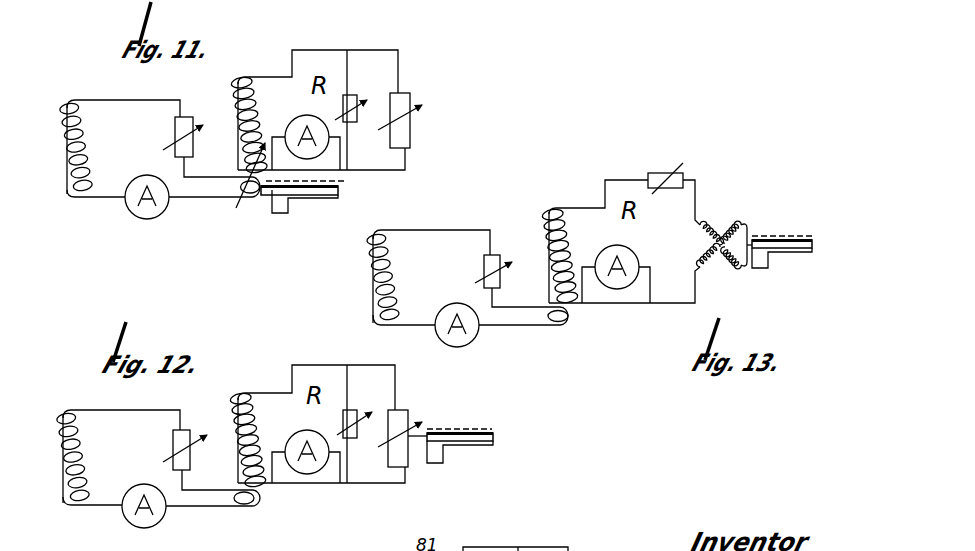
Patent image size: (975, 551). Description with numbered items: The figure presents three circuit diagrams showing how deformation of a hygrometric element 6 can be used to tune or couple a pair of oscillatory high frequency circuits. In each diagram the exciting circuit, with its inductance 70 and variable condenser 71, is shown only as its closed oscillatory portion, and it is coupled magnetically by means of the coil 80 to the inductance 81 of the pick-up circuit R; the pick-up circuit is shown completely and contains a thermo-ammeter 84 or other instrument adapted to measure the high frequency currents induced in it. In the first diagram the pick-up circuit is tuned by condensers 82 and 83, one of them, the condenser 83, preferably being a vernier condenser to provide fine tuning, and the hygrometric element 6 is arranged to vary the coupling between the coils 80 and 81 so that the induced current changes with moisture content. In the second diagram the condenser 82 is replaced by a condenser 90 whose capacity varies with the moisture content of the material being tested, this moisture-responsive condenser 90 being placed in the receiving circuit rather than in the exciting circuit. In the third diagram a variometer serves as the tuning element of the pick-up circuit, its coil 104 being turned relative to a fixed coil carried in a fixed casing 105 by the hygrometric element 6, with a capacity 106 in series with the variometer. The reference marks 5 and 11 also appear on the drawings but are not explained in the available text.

In FIG. 11, the heated element 5 is at (345, 181).
In FIG. 13, the heated element 5 is at (806, 237).
In FIG. 12, the heated element 5 is at (495, 429).
In FIG. 11, the hygrometric element 6 is at (318, 197).
In FIG. 13, the hygrometric element 6 is at (790, 250).
In FIG. 12, the hygrometric element 6 is at (479, 432).
In FIG. 11, the primary circuit 11 is at (138, 112).
In FIG. 13, the primary circuit 11 is at (455, 245).
In FIG. 12, the primary circuit 11 is at (129, 431).
In FIG. 11, the inductance 70 is at (71, 99).
In FIG. 13, the inductance 70 is at (348, 268).
In FIG. 12, the inductance 70 is at (62, 441).
In FIG. 11, the variable condenser 71 is at (187, 119).
In FIG. 13, the variable condenser 71 is at (497, 258).
In FIG. 12, the variable condenser 71 is at (188, 432).
In FIG. 11, the coil 80 is at (255, 205).
In FIG. 13, the coil 80 is at (566, 328).
In FIG. 12, the coil 80 is at (246, 509).
In FIG. 11, the inductance 81 is at (260, 78).
In FIG. 13, the inductance 81 is at (558, 207).
In FIG. 12, the inductance 81 is at (262, 384).
In FIG. 11, the condenser 82 is at (404, 93).
In FIG. 11, the condenser 83 is at (353, 95).
In FIG. 12, the condenser 83 is at (353, 410).
In FIG. 11, the thermo-ammeter 84 is at (303, 116).
In FIG. 13, the thermo-ammeter 84 is at (613, 246).
In FIG. 12, the thermo-ammeter 84 is at (298, 431).
In FIG. 12, the condenser variable with variations in the moisture content 90 is at (406, 414).
In FIG. 13, the coil 104 is at (708, 228).
In FIG. 13, the fixed casing 105 is at (742, 223).
In FIG. 13, the capacity 106 is at (678, 168).